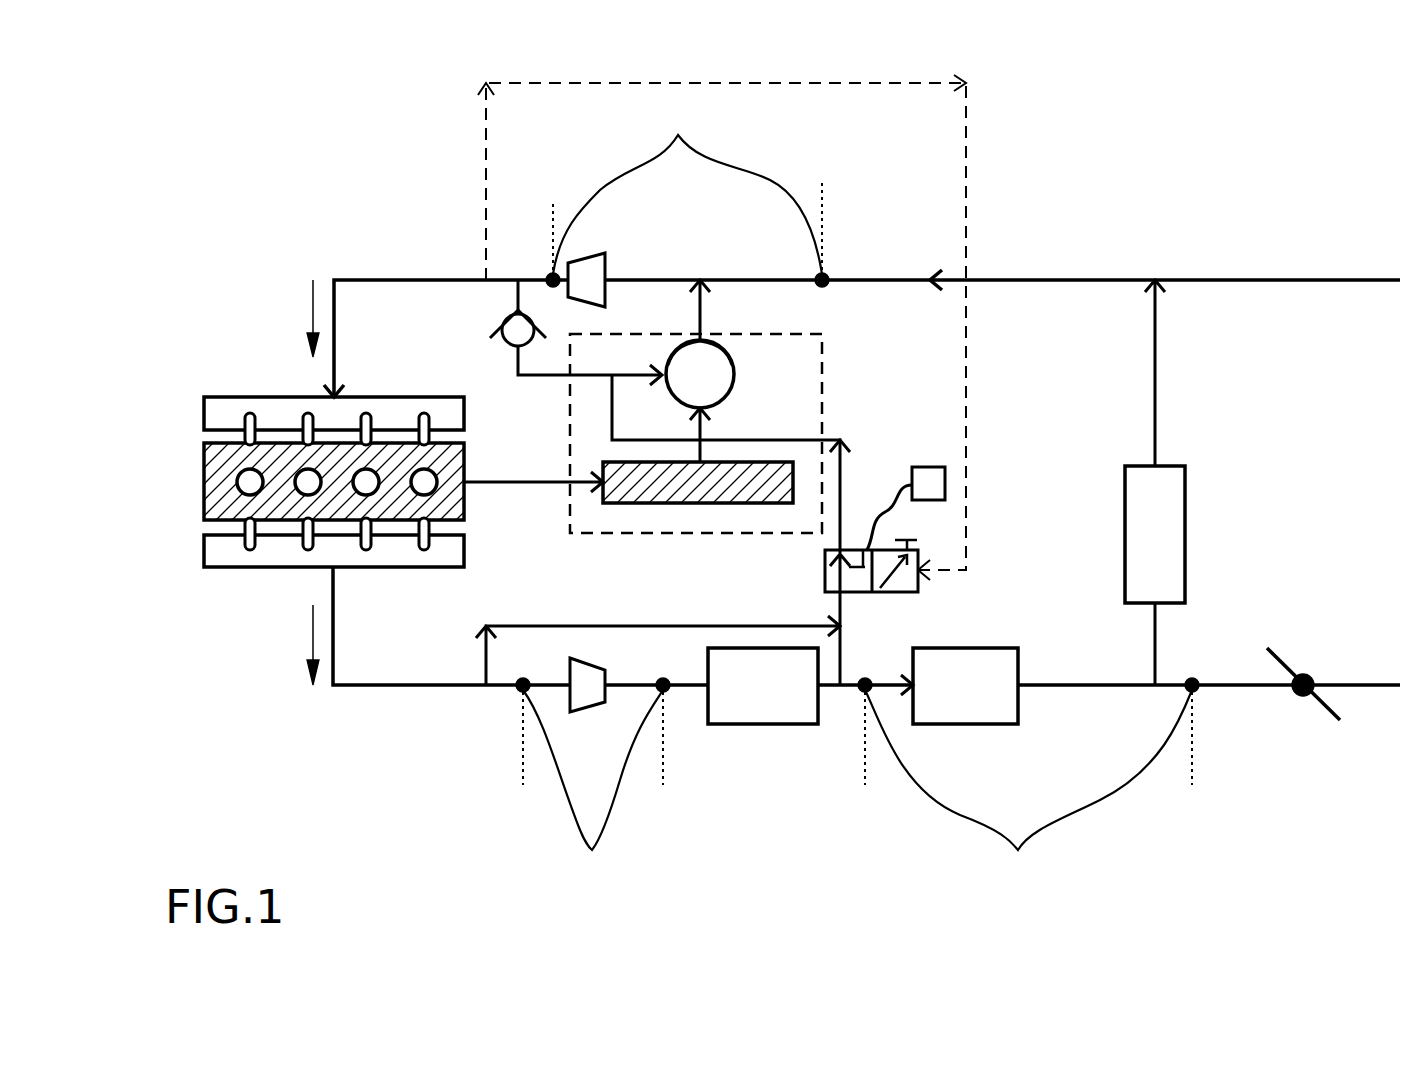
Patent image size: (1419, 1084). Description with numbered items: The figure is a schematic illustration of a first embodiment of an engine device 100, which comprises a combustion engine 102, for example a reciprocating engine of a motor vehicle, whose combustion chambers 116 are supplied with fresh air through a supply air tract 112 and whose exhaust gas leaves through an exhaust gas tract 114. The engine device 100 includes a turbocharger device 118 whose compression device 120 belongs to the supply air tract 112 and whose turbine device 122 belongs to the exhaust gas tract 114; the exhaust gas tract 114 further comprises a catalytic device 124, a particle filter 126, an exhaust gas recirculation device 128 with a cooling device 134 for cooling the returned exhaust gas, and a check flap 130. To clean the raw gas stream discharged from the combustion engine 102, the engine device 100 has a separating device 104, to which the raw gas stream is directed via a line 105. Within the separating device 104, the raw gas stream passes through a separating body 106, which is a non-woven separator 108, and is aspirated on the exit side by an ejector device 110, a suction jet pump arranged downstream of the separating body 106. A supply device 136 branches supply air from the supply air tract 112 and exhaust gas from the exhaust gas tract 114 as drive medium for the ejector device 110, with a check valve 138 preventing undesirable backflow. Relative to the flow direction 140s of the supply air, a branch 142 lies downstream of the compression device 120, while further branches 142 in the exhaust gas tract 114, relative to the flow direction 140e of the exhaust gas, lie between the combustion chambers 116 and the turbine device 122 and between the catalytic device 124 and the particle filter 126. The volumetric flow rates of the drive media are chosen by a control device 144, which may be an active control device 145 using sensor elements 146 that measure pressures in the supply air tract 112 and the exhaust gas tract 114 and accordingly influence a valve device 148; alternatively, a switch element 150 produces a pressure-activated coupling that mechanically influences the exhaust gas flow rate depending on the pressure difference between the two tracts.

The engine device 100 is at (270, 205).
The combustion engine 102 is at (280, 510).
The separating device 104 is at (832, 348).
The line 105 is at (514, 488).
The separating body 106 is at (735, 503).
The non-woven separator 108 is at (655, 503).
The ejector device 110 is at (735, 370).
The supply air tract 112 is at (380, 272).
The exhaust gas tract 114 is at (389, 700).
The combustion chambers 116 is at (421, 488).
The turbocharger device 118 is at (553, 272).
The compression device 120 is at (594, 265).
The turbine device 122 is at (587, 695).
The catalytic device 124 is at (772, 713).
The particle filter 126 is at (967, 713).
The exhaust gas recirculation device 128 is at (1185, 570).
The check flap 130 is at (1296, 702).
The cooling device 134 is at (1165, 505).
The supply device 136 is at (481, 315).
The check valve 138 is at (510, 347).
The flow direction of the supply air 140s is at (313, 305).
The flow direction of the exhaust gas 140e is at (313, 632).
The branch 142 is at (539, 272).
The control device 144 is at (925, 478).
The active control device 145 is at (938, 478).
The sensor elements 146 is at (857, 494).
The valve device 148 is at (913, 597).
The switch element 150 is at (922, 587).